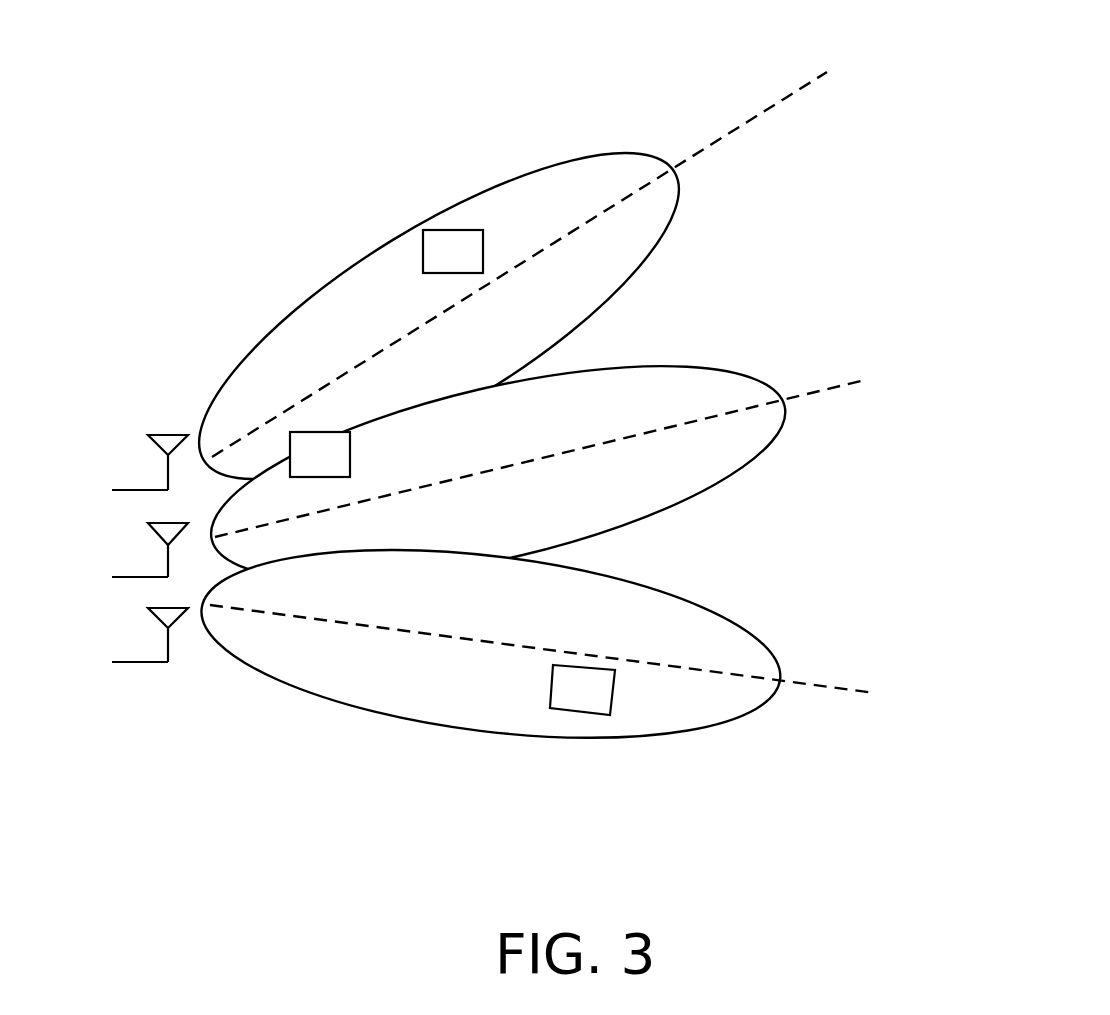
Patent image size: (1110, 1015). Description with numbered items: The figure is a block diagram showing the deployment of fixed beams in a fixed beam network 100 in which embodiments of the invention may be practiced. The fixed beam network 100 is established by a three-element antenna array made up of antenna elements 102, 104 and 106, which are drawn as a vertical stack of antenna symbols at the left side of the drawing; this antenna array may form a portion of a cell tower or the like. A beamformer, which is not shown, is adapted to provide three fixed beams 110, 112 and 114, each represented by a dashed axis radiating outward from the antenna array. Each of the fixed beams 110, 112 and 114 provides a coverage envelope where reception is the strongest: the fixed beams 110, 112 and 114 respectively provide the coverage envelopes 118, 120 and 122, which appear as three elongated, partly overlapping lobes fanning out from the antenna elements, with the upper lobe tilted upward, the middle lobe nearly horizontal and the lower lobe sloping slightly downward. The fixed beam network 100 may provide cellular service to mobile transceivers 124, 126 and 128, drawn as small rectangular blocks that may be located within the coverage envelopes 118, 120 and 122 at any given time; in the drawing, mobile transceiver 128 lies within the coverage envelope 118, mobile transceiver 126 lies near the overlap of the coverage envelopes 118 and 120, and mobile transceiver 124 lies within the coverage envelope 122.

The fixed beam network 100 is at (565, 838).
The antenna element 102 is at (123, 460).
The antenna element 104 is at (123, 550).
The antenna element 106 is at (123, 635).
The fixed beam 110 is at (723, 132).
The fixed beam 112 is at (558, 435).
The fixed beam 114 is at (558, 649).
The coverage envelope 118 is at (439, 316).
The coverage envelope 120 is at (498, 473).
The coverage envelope 122 is at (491, 643).
The mobile transceiver 124 is at (621, 690).
The mobile transceiver 126 is at (364, 449).
The mobile transceiver 128 is at (486, 232).